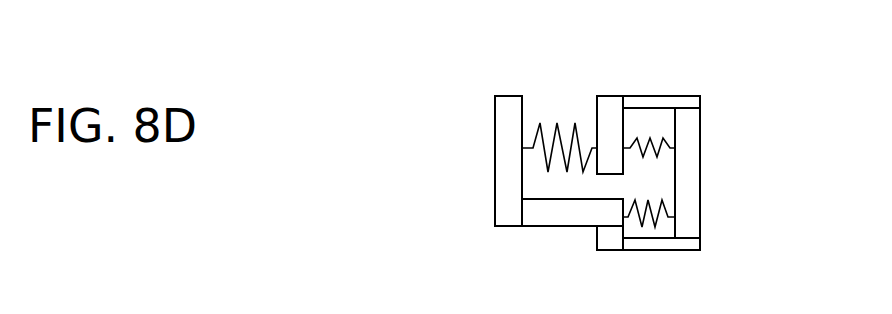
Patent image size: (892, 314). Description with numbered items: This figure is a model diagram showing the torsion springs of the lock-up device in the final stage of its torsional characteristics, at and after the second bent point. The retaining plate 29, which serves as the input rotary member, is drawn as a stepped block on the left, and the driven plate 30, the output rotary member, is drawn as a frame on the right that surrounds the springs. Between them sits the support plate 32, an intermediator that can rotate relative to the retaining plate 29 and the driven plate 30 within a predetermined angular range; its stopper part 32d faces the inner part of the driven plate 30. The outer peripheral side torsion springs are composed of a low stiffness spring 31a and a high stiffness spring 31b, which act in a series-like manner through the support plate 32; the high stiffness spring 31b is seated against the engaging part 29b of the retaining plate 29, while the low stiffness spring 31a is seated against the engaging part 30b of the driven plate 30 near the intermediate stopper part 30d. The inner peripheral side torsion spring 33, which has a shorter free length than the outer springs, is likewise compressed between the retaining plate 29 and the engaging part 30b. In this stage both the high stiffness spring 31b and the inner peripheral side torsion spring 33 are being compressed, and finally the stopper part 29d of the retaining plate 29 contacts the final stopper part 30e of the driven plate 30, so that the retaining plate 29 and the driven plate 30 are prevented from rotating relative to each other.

The retaining plate 29 is at (492, 210).
The engaging part 29b is at (521, 128).
The stopper part 29d is at (622, 240).
The driven plate 30 is at (723, 133).
The engaging part 30b is at (676, 168).
The intermediate stopper part 30d is at (676, 112).
The final stopper part 30e is at (647, 243).
The low stiffness spring 31a is at (645, 138).
The high stiffness spring 31b is at (543, 126).
The support plate 32 is at (610, 93).
The stopper part 32d is at (633, 102).
The inner peripheral side torsion spring 33 is at (650, 197).